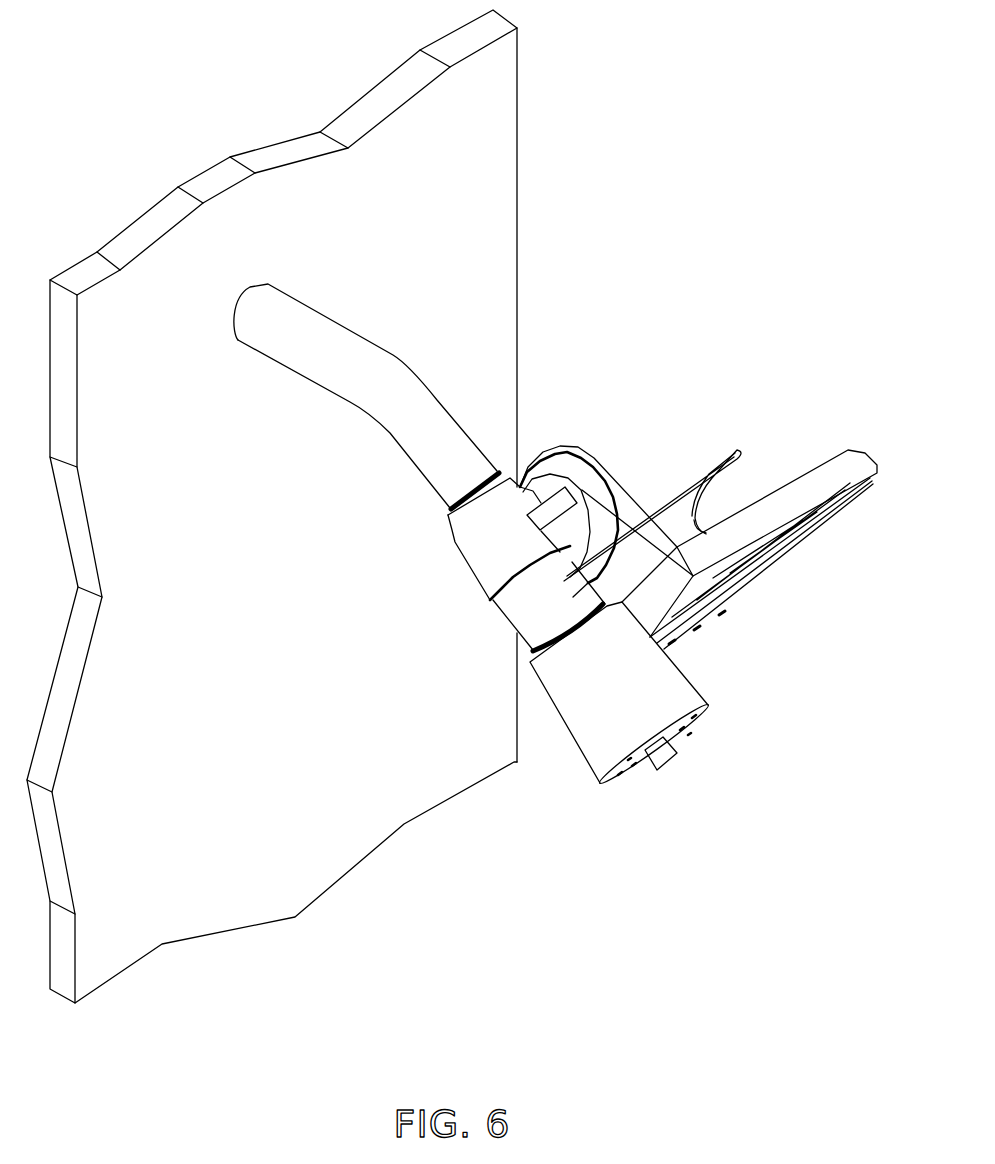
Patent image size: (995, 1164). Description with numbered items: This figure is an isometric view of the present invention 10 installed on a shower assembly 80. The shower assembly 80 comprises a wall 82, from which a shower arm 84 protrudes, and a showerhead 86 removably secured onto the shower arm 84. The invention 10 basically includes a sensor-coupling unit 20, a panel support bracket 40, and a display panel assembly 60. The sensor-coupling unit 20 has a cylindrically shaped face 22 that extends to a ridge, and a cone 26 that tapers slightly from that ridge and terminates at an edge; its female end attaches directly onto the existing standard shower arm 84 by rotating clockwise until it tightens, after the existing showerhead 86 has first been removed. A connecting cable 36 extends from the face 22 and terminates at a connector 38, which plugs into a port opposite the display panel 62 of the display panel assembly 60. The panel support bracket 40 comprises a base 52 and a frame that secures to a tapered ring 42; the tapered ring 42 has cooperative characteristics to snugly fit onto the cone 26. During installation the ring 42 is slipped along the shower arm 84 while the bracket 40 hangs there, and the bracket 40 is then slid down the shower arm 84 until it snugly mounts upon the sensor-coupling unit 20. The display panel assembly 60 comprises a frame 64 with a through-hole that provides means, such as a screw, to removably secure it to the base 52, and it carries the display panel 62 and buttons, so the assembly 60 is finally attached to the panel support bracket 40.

The present invention 10 is at (637, 552).
The sensor-coupling unit 20 is at (494, 581).
The cylindrically shaped face 22 is at (520, 641).
The cone 26 is at (460, 522).
The connecting cable 36 is at (738, 457).
The connector 38 is at (706, 527).
The panel support bracket 40 is at (533, 453).
The tapered ring 42 is at (497, 562).
The base 52 is at (567, 477).
The display panel assembly 60 is at (757, 549).
The display panel 62 is at (770, 558).
The frame 64 is at (607, 473).
The shower assembly 80 is at (272, 506).
The wall 82 is at (228, 500).
The shower arm 84 is at (286, 312).
The showerhead 86 is at (661, 679).